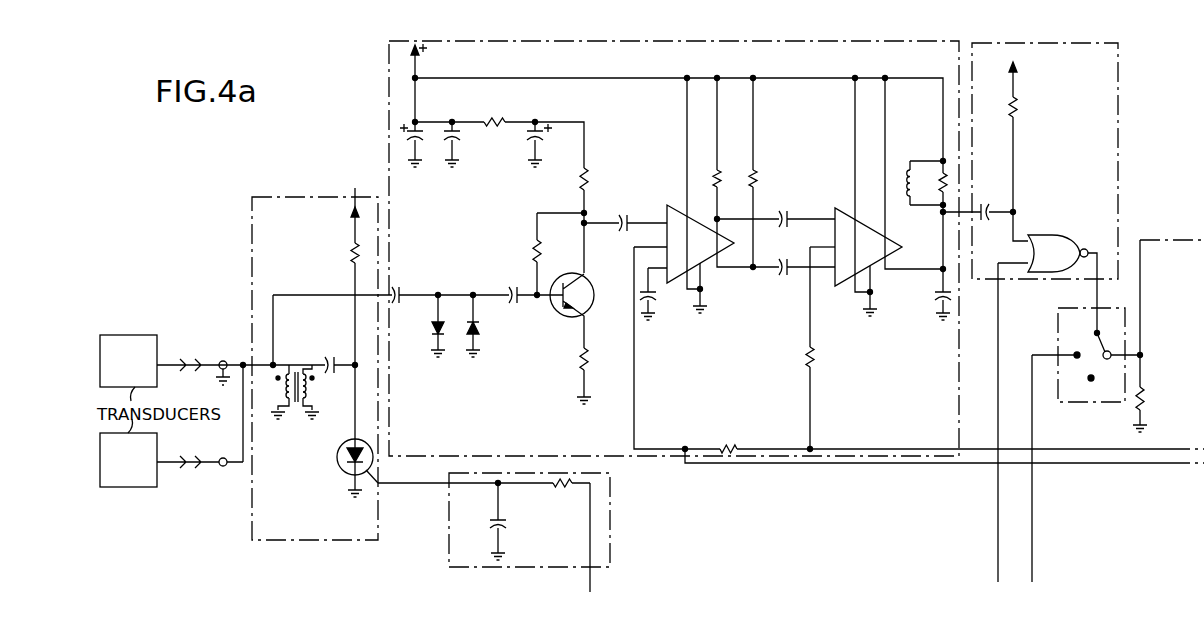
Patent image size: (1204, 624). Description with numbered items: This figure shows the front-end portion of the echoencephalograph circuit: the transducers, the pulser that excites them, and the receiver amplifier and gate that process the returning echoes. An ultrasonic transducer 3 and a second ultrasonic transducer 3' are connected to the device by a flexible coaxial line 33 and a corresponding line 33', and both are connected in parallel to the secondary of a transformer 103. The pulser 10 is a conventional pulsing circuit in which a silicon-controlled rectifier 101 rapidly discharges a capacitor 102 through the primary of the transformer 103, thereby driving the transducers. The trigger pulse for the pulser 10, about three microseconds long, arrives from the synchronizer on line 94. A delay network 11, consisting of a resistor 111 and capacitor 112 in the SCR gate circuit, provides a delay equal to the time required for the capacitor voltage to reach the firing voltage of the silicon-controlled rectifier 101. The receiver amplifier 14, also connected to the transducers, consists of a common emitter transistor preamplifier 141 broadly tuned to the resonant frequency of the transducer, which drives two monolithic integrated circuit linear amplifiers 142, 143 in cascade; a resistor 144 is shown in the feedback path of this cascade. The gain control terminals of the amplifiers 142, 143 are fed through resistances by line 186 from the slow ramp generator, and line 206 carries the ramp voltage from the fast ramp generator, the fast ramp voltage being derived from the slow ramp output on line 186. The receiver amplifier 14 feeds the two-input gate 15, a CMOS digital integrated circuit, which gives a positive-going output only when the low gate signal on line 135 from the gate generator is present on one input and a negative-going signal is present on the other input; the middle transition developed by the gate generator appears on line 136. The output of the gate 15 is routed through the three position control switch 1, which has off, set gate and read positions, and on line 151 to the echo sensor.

The ultrasonic transducer 3 is at (128, 347).
The second ultrasonic transducer 3' is at (128, 478).
The flexible coaxial line 33 is at (201, 357).
The flexible coaxial line 33' is at (200, 416).
The pulser circuit 10 is at (252, 498).
The silicon-controlled rectifier 101 is at (339, 463).
The capacitor 102 is at (332, 337).
The transformer 103 is at (291, 418).
The delay network 11 is at (610, 497).
The resistor 111 is at (561, 488).
The capacitor 112 is at (508, 524).
The line 94 is at (590, 578).
The receiver amplifier 14 is at (876, 41).
The common emitter transistor preamplifier 141 is at (513, 251).
The monolithic integrated circuit linear amplifier 142 is at (708, 256).
The monolithic integrated circuit linear amplifier 143 is at (849, 270).
The feedback resistor 144 is at (815, 357).
The gate 15 is at (1072, 43).
The line 151 is at (1161, 240).
The three position control switch 1 is at (1057, 318).
The line 135 is at (997, 344).
The line 136 is at (1043, 358).
The line 186 is at (1145, 449).
The line 206 is at (1119, 465).